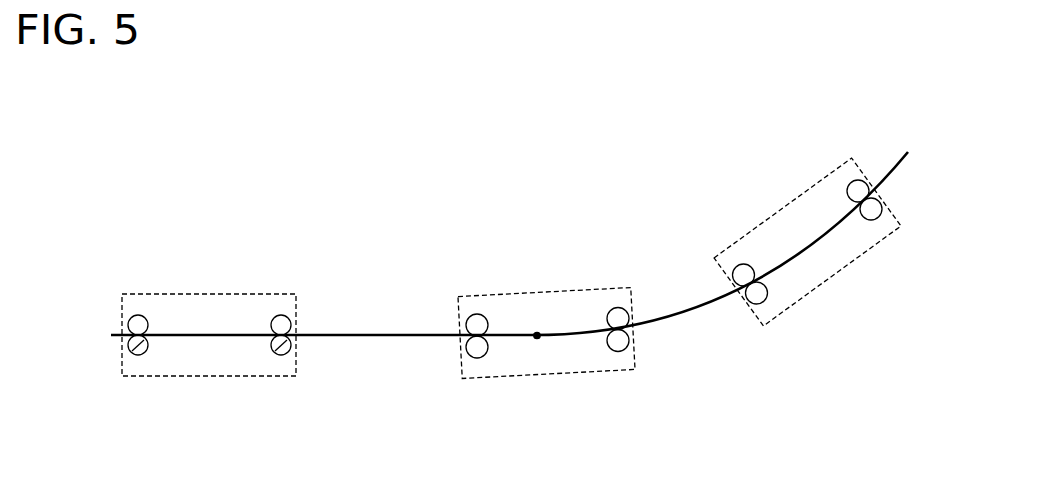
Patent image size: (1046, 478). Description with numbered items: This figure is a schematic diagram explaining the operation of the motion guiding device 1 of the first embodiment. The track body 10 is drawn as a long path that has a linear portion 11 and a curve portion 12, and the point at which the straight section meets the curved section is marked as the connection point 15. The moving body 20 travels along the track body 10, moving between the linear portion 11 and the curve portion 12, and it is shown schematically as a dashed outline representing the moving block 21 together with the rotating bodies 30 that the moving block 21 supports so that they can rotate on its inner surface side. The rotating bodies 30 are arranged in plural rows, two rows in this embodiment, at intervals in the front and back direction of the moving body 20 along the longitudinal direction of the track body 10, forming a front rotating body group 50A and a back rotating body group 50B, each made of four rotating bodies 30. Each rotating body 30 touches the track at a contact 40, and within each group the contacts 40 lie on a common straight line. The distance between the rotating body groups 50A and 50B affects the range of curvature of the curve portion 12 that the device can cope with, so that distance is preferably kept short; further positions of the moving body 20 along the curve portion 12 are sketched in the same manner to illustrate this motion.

The motion guiding device 1 is at (160, 159).
The track body 10 is at (332, 334).
The linear portion 11 is at (412, 332).
The curve portion 12 is at (685, 307).
The connection point 15 is at (537, 332).
The moving body 20 is at (133, 289).
The moving block 21 is at (188, 294).
The rotating body 30 is at (126, 316).
The contact 40 is at (142, 345).
The rotating body group 50A is at (145, 306).
The rotating body group 50B is at (287, 306).